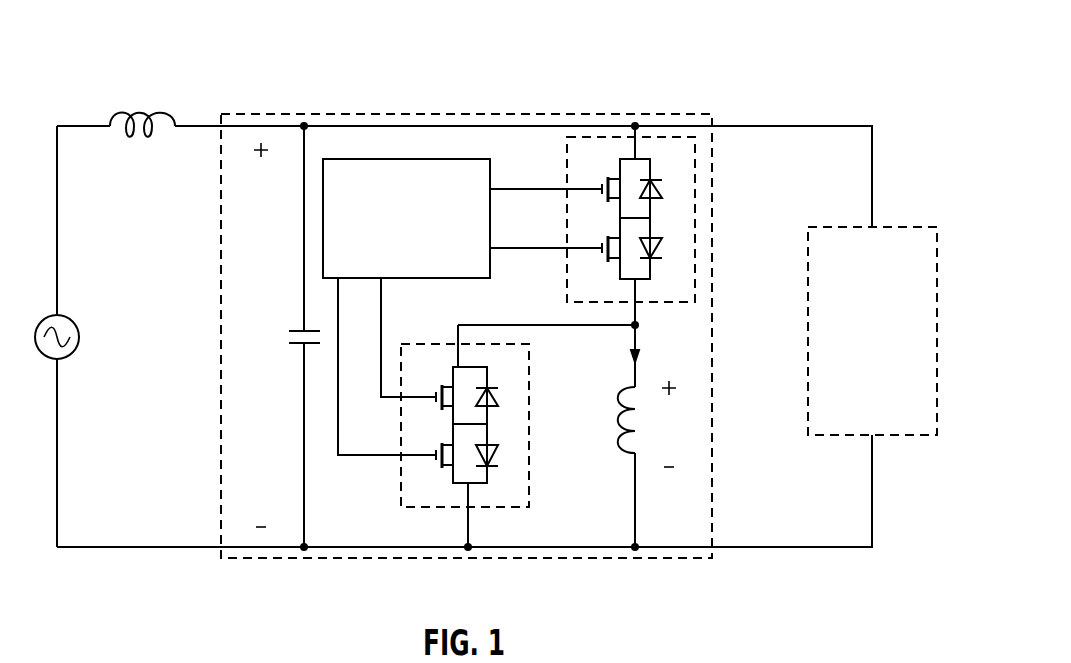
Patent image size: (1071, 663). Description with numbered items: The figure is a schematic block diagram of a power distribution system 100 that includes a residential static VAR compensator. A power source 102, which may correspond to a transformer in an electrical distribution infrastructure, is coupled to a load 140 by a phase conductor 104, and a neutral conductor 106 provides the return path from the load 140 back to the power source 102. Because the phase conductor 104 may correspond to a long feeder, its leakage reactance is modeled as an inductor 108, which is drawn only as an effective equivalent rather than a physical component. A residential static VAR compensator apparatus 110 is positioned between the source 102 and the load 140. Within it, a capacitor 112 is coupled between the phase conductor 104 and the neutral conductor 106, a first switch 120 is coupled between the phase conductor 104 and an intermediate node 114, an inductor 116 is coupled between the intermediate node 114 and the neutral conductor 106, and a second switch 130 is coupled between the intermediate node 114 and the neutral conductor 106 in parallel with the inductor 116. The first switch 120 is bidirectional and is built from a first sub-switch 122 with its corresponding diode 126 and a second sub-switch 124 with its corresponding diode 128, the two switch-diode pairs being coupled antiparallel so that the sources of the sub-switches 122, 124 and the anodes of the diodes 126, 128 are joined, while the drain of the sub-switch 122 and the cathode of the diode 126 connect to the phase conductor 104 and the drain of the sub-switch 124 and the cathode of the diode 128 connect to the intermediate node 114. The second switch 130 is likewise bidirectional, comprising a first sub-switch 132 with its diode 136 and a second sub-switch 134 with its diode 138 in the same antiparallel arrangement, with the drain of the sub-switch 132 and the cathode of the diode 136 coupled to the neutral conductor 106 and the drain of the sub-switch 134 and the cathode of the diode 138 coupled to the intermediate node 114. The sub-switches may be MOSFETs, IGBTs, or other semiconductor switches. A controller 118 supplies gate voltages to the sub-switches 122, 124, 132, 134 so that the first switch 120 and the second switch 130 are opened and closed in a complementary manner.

The power distribution system 100 is at (124, 40).
The power source 102 is at (75, 318).
The phase conductor 104 is at (204, 126).
The neutral conductor 106 is at (152, 546).
The inductor 108 is at (136, 115).
The residential static VAR compensator apparatus 110 is at (480, 105).
The capacitor 112 is at (300, 325).
The intermediate node 114 is at (640, 325).
The inductor 116 is at (648, 450).
The controller 118 is at (323, 219).
The first switch 120 is at (587, 137).
The first sub-switch 122 is at (597, 185).
The second sub-switch 124 is at (597, 245).
The diode 126 is at (662, 190).
The diode 128 is at (662, 247).
The second switch 130 is at (455, 336).
The first sub-switch 132 is at (430, 458).
The second sub-switch 134 is at (430, 398).
The diode 136 is at (496, 450).
The diode 138 is at (496, 400).
The load 140 is at (897, 226).